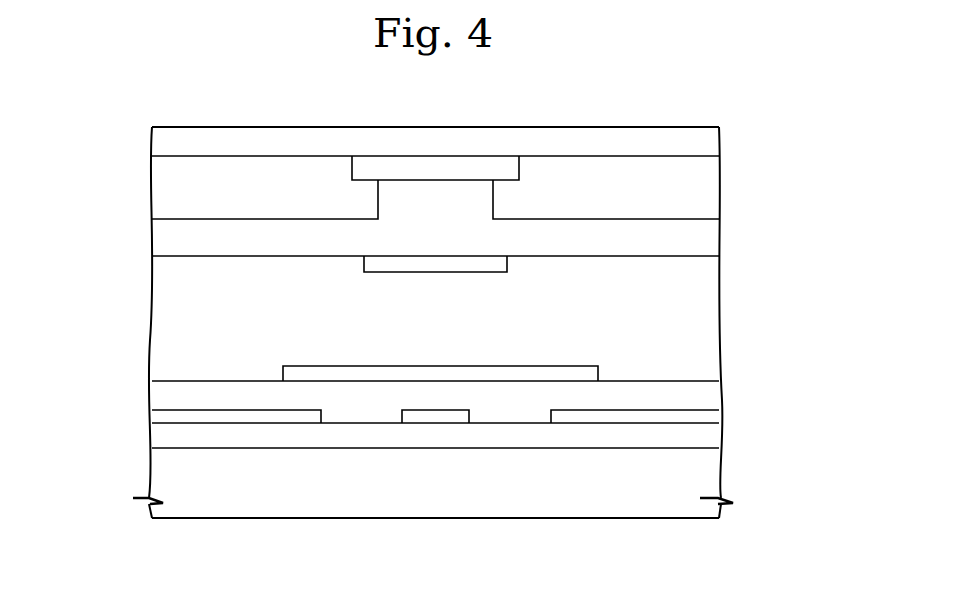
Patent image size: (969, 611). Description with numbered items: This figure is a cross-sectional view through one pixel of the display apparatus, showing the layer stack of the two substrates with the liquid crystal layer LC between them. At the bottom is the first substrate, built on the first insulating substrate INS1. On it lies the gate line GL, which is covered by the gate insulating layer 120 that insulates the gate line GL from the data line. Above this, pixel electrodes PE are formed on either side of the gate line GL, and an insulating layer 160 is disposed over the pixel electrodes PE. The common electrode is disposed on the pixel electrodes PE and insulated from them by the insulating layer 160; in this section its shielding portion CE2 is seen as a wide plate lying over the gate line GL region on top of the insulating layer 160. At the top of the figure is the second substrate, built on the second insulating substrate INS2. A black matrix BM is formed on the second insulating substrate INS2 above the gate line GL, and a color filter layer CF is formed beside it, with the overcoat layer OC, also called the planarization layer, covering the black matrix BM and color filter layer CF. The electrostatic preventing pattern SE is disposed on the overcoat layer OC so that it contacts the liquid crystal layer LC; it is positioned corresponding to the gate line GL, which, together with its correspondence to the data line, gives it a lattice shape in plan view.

The second insulating substrate INS2 is at (703, 142).
The color filter layer CF is at (703, 190).
The black matrix BM is at (463, 163).
The overcoat layer OC is at (703, 237).
The electrostatic preventing pattern SE is at (428, 262).
The liquid crystal layer LC is at (703, 288).
The shielding portion CE2 is at (567, 372).
The insulating layer 160 is at (703, 396).
The gate insulating layer 120 is at (703, 438).
The first insulating substrate INS1 is at (703, 478).
The pixel electrode PE is at (269, 417).
The gate line GL is at (437, 418).